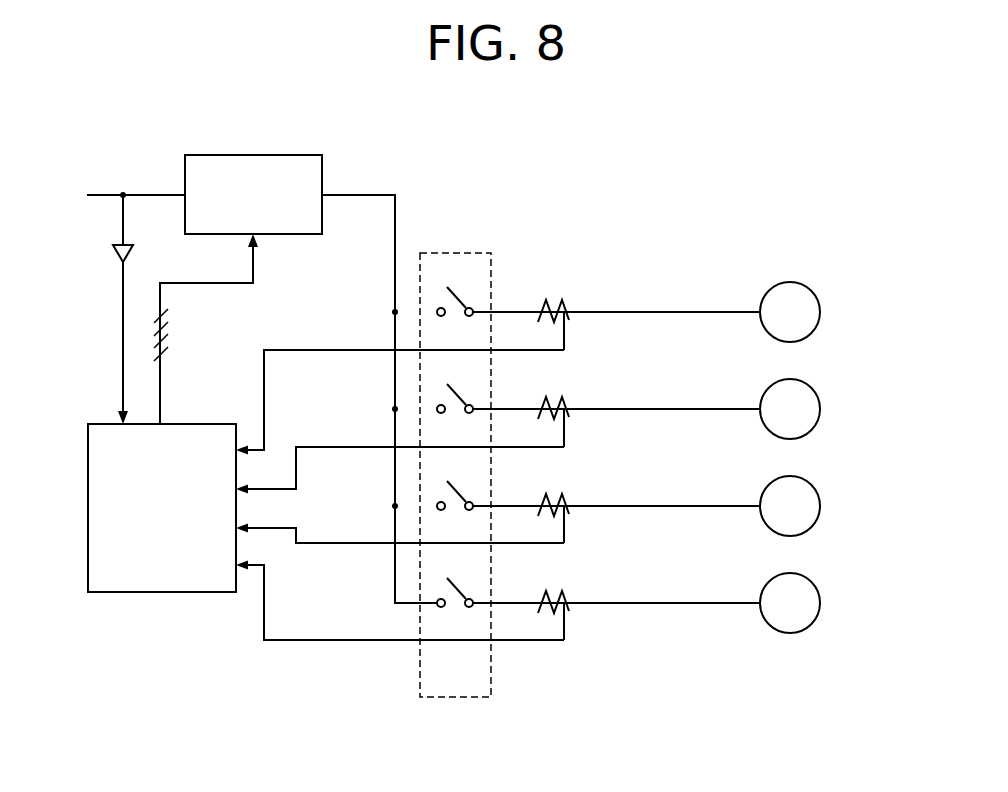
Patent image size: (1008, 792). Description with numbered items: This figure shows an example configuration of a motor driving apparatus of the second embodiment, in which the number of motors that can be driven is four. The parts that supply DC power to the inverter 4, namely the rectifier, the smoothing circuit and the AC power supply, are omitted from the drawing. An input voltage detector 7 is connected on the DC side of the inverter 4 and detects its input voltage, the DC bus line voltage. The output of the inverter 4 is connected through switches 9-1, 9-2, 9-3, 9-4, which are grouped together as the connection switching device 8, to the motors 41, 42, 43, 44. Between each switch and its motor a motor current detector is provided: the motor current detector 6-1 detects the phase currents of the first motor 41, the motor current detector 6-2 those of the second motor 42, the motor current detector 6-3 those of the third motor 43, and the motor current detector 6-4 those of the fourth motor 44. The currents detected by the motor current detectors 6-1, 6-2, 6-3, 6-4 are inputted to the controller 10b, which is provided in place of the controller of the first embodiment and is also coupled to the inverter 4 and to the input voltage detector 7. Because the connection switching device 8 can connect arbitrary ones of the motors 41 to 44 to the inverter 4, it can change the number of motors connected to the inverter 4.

The inverter 4 is at (282, 155).
The input voltage detector 7 is at (113, 251).
The connection switching device 8 is at (468, 253).
The switch 9-1 is at (455, 290).
The switch 9-2 is at (455, 387).
The switch 9-3 is at (455, 484).
The switch 9-4 is at (455, 581).
The motor current detector 6-1 is at (548, 300).
The motor current detector 6-2 is at (548, 397).
The motor current detector 6-3 is at (548, 494).
The motor current detector 6-4 is at (548, 591).
The first motor 41 is at (813, 291).
The second motor 42 is at (813, 388).
The third motor 43 is at (813, 485).
The fourth motor 44 is at (813, 582).
The controller 10b is at (165, 592).